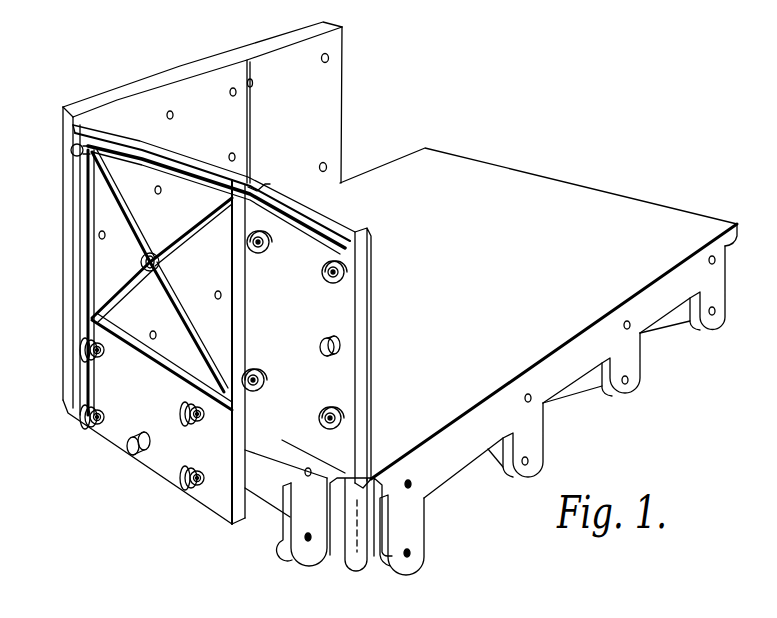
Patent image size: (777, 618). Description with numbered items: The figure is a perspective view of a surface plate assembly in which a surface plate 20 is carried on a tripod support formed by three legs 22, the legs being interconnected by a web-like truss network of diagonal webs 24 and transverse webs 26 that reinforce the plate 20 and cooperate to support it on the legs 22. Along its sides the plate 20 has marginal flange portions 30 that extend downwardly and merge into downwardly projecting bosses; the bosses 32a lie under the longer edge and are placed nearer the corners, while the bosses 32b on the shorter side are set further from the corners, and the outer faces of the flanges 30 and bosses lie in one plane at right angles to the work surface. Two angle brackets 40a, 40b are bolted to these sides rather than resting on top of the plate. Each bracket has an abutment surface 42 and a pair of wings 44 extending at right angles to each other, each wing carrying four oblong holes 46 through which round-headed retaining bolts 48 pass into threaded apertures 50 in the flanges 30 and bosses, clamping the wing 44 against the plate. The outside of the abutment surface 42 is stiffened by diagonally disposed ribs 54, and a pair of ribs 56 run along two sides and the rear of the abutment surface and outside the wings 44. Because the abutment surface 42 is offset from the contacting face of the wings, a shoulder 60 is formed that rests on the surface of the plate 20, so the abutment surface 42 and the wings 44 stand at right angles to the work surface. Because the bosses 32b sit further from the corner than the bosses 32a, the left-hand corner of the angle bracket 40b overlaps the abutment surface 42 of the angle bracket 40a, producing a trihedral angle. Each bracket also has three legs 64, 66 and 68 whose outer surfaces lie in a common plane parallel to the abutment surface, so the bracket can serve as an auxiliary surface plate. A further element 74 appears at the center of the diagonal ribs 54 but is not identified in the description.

The surface plate 20 is at (735, 233).
The legs 22 is at (360, 568).
The diagonal webs 24 is at (677, 313).
The transverse webs 26 is at (273, 497).
The marginal flange portions 30 is at (575, 380).
The bosses 32a is at (712, 325).
The bosses 32b is at (315, 553).
The angle bracket 40a is at (152, 90).
The angle bracket 40b is at (162, 152).
The abutment surface 42 is at (203, 90).
The wings 44 is at (213, 503).
The holes 46 is at (258, 253).
The retaining bolts 48 is at (103, 356).
The threaded apertures 50 is at (532, 397).
The diagonally disposed webs or ribs 54 is at (130, 226).
The ribs 56 is at (188, 192).
The shoulders 60 is at (263, 193).
The leg 64 is at (71, 151).
The leg 66 is at (127, 450).
The leg 68 is at (338, 344).
The brace hub 74 is at (152, 278).